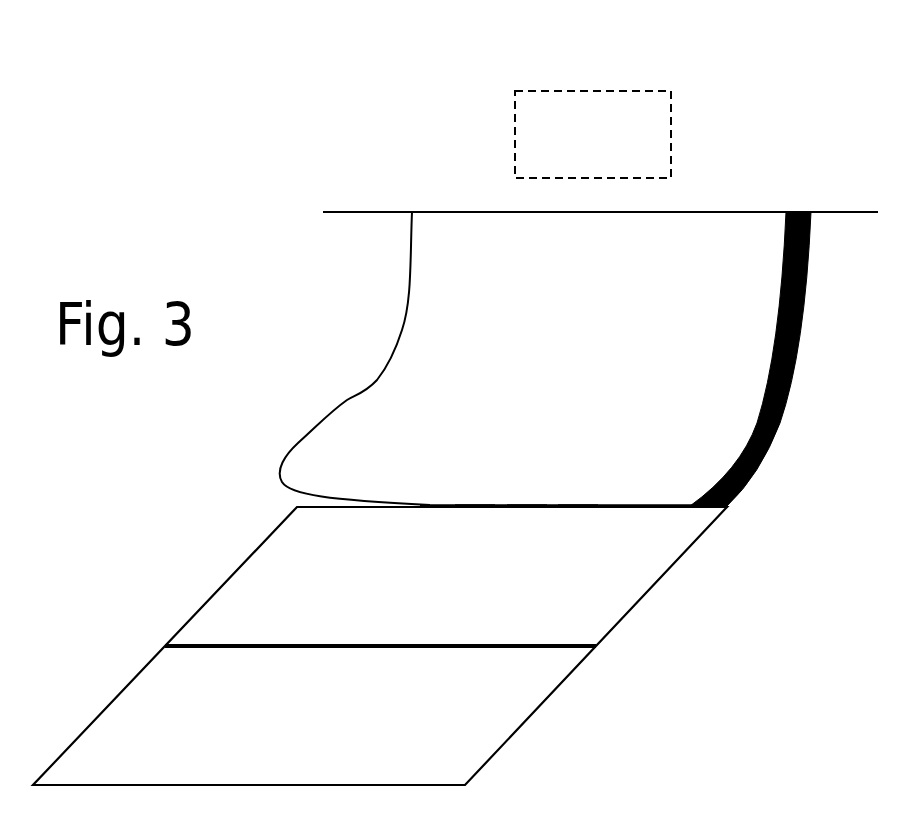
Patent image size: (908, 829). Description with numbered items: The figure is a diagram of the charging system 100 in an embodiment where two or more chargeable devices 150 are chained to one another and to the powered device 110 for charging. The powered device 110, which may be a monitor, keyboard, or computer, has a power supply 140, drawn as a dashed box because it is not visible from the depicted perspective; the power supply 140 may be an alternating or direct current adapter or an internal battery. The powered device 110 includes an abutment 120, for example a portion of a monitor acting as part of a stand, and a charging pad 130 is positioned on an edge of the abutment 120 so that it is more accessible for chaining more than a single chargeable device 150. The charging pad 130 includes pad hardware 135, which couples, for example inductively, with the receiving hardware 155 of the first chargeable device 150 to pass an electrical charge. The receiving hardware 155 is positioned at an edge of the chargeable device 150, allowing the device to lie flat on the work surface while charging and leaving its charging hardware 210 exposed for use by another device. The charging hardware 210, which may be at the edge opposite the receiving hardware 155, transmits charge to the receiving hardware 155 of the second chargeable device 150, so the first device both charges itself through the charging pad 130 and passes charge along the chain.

The charging system 100 is at (137, 78).
The powered device 110 is at (409, 171).
The abutment 120 is at (328, 447).
The charging pad 130 is at (525, 492).
The pad hardware 135 is at (576, 492).
The power supply 140 is at (619, 149).
The chargeable device 150 is at (467, 594).
The receiving hardware 155 is at (473, 492).
The charging hardware 210 is at (342, 632).